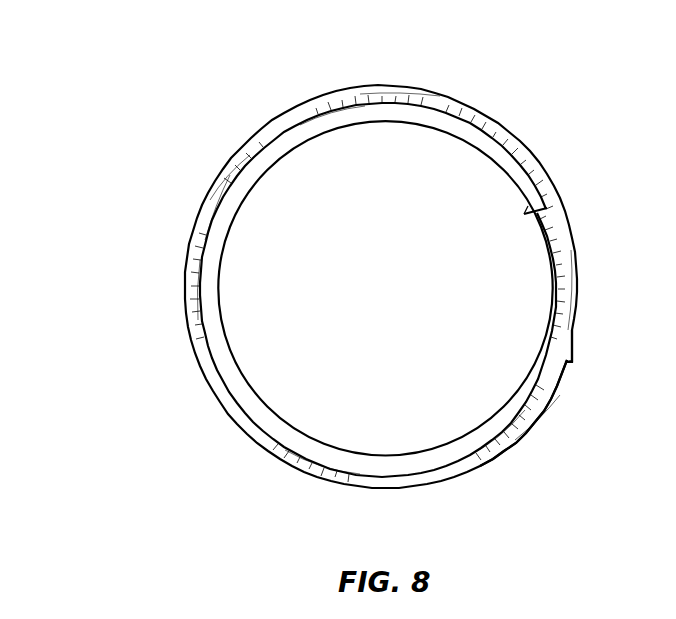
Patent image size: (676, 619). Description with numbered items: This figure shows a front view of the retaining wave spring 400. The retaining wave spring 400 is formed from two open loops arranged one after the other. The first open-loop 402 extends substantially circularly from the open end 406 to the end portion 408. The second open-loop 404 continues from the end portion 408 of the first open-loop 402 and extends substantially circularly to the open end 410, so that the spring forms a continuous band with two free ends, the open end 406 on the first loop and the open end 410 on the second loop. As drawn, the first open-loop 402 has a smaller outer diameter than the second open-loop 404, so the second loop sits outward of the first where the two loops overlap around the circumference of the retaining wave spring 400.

The retaining wave spring 400 is at (126, 44).
The first open-loop 402 is at (258, 130).
The second open-loop 404 is at (538, 444).
The open end 406 is at (536, 218).
The end portion 408 is at (557, 335).
The open end 410 is at (570, 361).